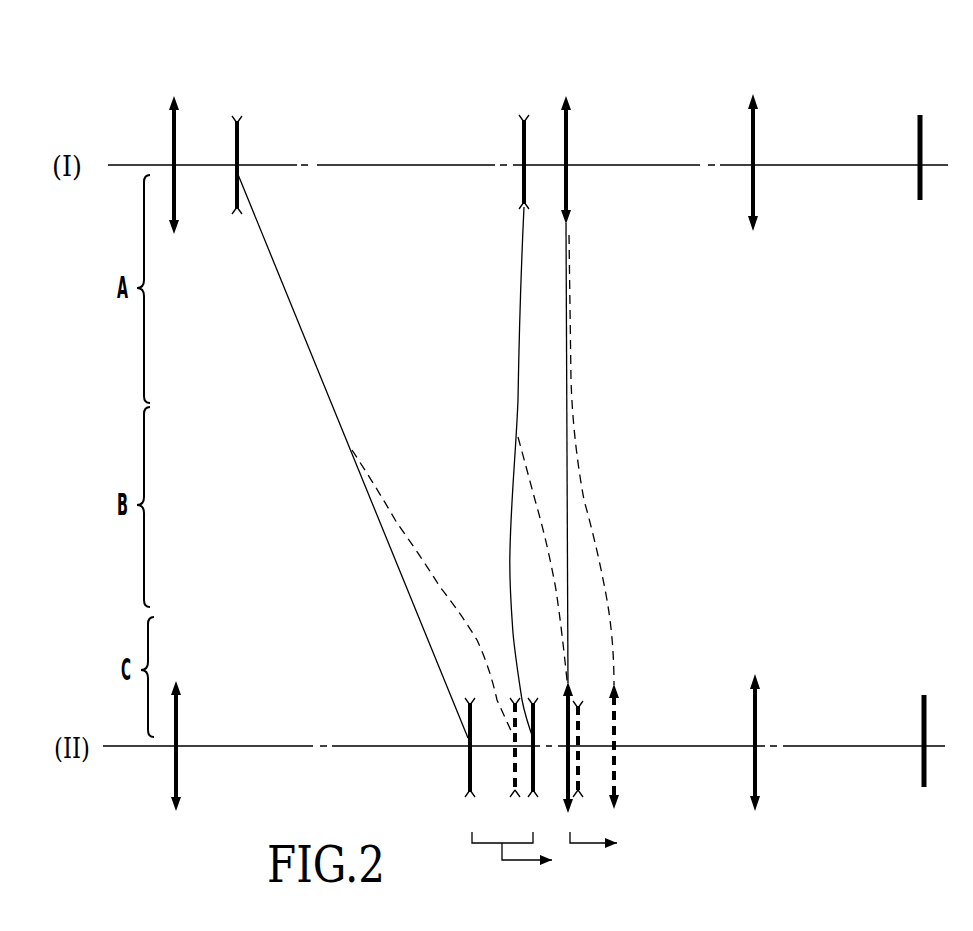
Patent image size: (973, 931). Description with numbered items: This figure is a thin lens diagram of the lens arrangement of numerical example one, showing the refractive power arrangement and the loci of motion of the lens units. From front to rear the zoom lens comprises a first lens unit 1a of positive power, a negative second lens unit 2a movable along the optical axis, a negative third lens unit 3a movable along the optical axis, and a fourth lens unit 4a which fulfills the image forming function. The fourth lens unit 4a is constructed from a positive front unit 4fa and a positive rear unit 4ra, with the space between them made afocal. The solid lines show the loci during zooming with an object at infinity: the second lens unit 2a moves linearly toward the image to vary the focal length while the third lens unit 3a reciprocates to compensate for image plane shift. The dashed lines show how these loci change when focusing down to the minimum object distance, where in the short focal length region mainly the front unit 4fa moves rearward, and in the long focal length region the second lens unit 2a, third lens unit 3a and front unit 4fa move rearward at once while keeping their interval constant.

The first lens unit 1a is at (178, 98).
The second lens unit 2a is at (239, 118).
The third lens unit 3a is at (522, 115).
The fourth lens unit 4a is at (676, 411).
The front unit 4fa is at (567, 98).
The rear unit 4ra is at (772, 438).